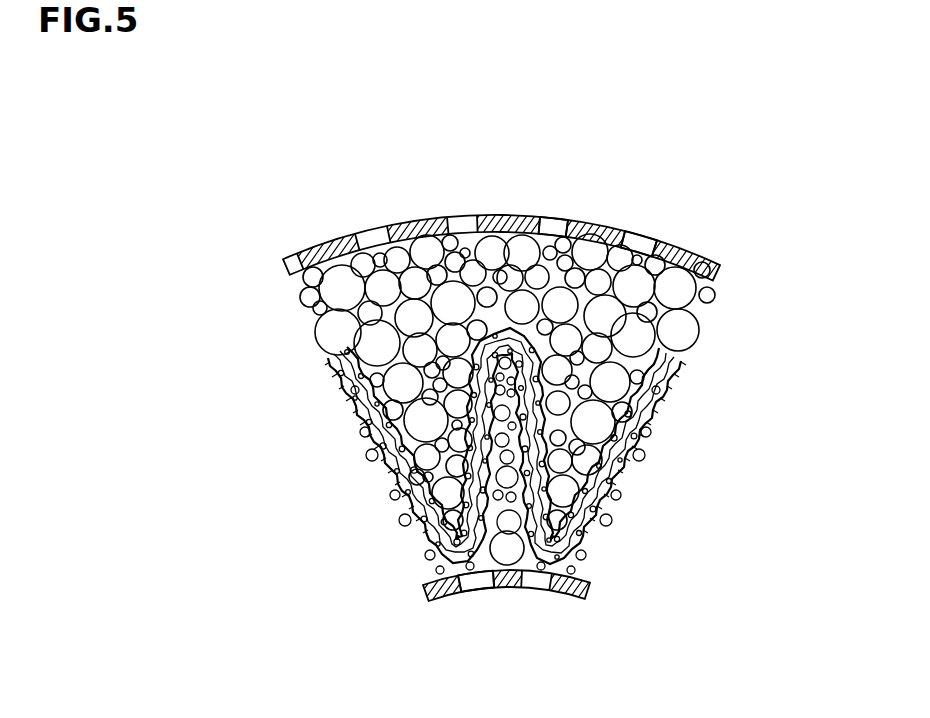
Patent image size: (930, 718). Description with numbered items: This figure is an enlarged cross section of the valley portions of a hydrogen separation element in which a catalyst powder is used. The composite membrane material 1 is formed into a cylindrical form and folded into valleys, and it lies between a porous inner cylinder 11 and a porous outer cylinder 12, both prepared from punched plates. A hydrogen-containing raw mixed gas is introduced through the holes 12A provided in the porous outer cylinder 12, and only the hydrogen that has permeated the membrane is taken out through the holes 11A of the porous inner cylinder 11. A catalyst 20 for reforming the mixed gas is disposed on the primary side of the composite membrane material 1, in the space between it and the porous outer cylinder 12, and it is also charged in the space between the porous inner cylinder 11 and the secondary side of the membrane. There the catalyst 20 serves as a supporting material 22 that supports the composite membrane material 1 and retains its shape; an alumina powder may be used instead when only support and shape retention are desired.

The composite membrane material 1 is at (655, 455).
The porous inner cylinder 11 is at (513, 578).
The holes of the porous inner cylinder 11A is at (475, 578).
The porous outer cylinder 12 is at (690, 248).
The holes of the porous outer cylinder 12A is at (553, 223).
The catalyst 20 is at (627, 230).
The supporting material 22 is at (590, 558).